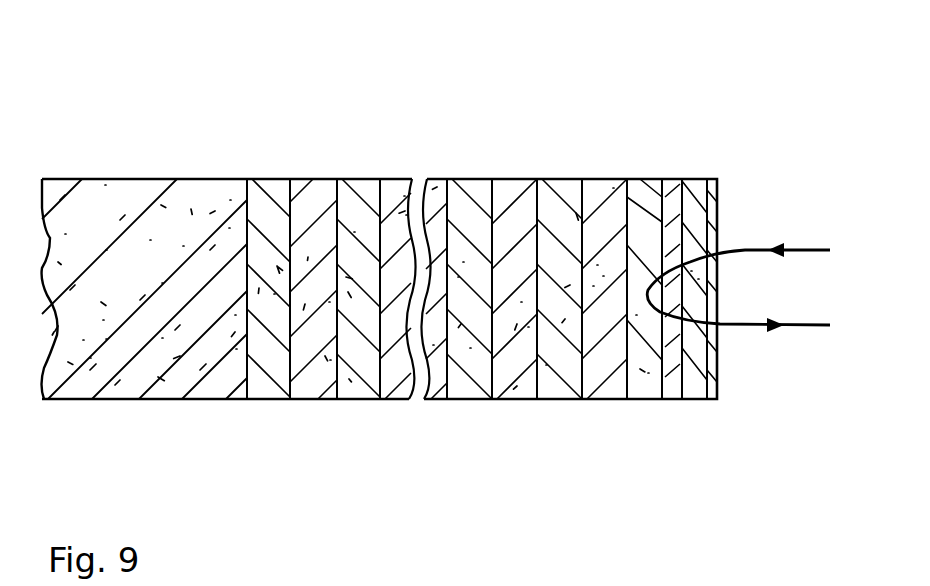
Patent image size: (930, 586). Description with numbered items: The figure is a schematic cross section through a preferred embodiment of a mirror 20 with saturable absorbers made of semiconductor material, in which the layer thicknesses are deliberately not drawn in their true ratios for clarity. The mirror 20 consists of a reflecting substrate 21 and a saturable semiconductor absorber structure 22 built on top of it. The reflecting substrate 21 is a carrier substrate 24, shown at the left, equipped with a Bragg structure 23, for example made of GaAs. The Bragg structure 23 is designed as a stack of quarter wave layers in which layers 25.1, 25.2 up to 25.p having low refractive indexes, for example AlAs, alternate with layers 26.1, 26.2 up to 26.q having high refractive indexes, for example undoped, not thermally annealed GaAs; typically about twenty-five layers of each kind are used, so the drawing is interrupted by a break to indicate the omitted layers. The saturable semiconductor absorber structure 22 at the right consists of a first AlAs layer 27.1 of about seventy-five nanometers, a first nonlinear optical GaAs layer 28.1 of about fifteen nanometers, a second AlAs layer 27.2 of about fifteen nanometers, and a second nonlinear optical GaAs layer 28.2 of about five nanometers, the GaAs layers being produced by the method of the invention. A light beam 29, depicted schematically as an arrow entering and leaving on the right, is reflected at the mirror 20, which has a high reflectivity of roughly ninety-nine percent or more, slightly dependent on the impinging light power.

The mirror 20 is at (706, 502).
The reflecting substrate 21 is at (625, 145).
The saturable semiconductor absorber structure 22 is at (716, 168).
The Bragg structure 23 is at (625, 167).
The carrier substrate 24 is at (247, 169).
The quarter wave layer 25.1 is at (267, 399).
The quarter wave layer 25.2 is at (355, 399).
The quarter wave layer 25.p is at (557, 399).
The quarter wave layer 26.1 is at (312, 399).
The quarter wave layer 26.2 is at (403, 399).
The quarter wave layer 26.q is at (600, 399).
The first AlAs layer 27.1 is at (648, 399).
The second AlAs layer 27.2 is at (710, 388).
The first nonlinear optical GaAs layer 28.1 is at (693, 399).
The second nonlinear optical GaAs layer 28.2 is at (712, 361).
The light path / radiation 29 is at (810, 245).